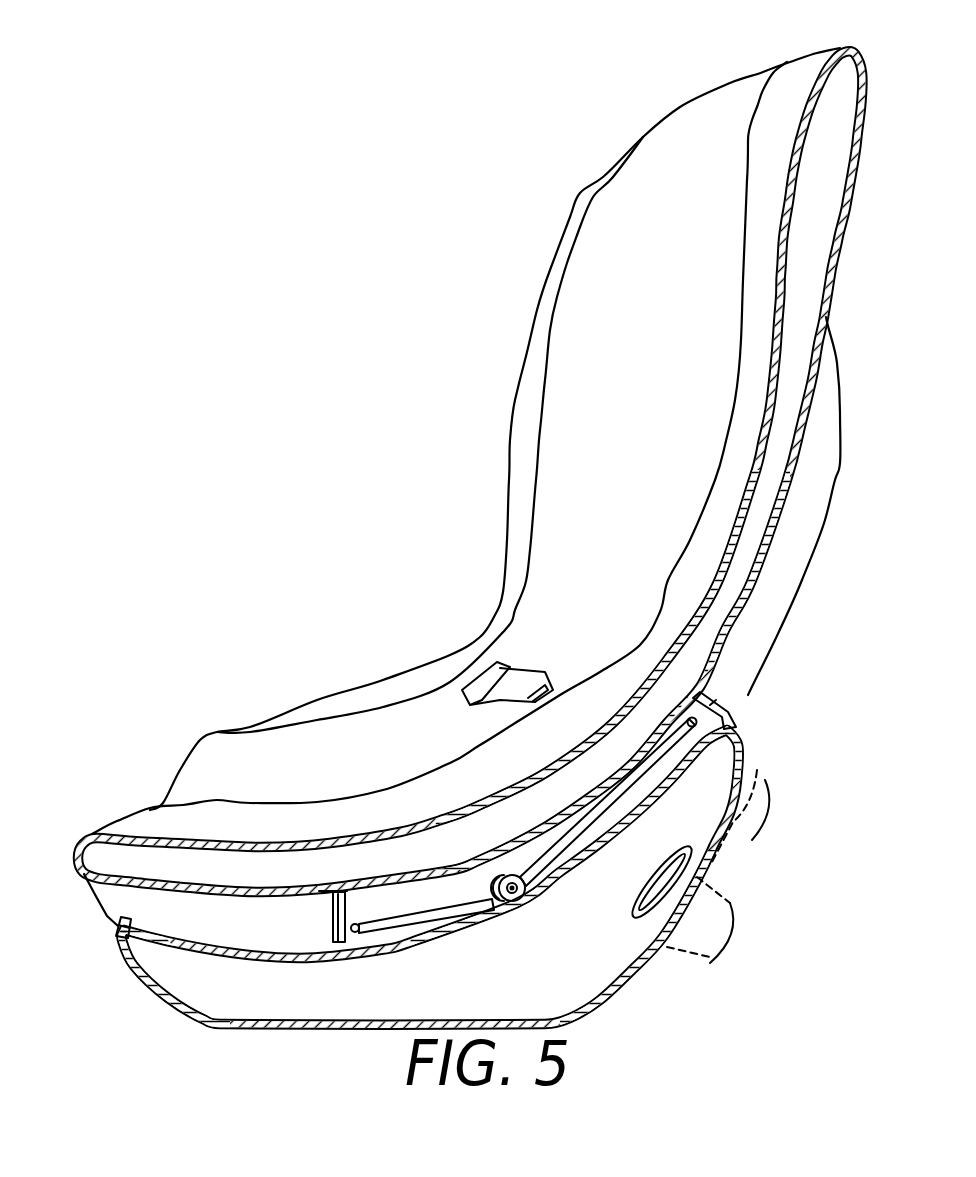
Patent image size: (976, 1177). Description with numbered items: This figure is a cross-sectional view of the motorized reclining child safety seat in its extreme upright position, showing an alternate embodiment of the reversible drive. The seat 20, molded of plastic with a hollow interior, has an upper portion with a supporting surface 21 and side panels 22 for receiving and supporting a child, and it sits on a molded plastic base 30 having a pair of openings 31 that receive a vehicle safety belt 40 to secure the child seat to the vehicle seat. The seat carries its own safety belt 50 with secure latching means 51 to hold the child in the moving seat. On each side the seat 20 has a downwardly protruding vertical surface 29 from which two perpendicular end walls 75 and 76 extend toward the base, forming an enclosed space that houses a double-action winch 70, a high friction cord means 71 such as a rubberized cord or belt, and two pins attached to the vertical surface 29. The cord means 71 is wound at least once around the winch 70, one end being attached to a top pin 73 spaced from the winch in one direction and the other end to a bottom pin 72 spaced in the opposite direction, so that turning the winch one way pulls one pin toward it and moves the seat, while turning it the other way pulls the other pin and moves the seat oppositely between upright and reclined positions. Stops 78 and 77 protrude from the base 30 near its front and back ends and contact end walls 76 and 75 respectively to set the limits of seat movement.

The seat 20 is at (846, 46).
The supporting surface 21 is at (124, 815).
The side panels 22 is at (510, 483).
The downwardly protruding vertical surface 29 is at (106, 913).
The base 30 is at (631, 980).
The openings 31 is at (640, 900).
The vehicle safety belt 40 is at (727, 867).
The safety belt 50 is at (479, 704).
The latching means 51 is at (547, 680).
The double-action winch 70 is at (516, 901).
The high friction cord means 71 is at (421, 918).
The bottom pin 72 is at (355, 934).
The top pin 73 is at (735, 730).
The end wall 75 is at (698, 716).
The end wall 76 is at (333, 932).
The stop 77 is at (733, 712).
The stop 78 is at (113, 924).